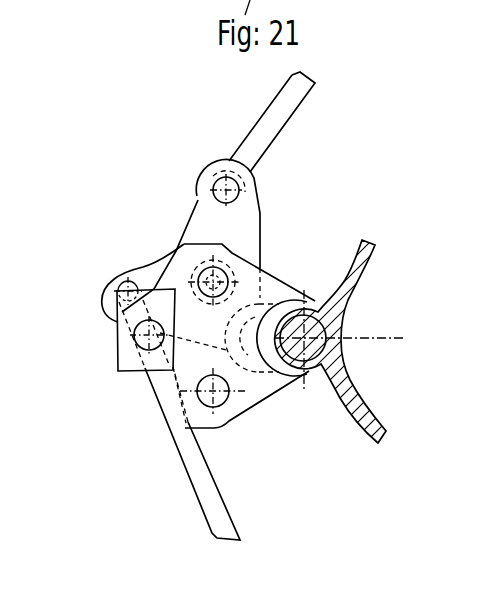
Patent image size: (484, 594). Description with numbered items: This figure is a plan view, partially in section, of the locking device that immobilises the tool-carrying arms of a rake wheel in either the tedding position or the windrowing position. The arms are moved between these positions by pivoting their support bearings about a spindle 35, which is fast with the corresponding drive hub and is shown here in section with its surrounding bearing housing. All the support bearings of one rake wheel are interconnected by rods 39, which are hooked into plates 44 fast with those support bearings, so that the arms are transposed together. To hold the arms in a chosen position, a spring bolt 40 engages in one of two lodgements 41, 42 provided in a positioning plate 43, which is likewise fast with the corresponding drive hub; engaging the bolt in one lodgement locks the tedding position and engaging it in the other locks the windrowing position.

The spindle 35 is at (312, 342).
The rod 39 is at (273, 128).
The spring bolt 40 is at (211, 279).
The lodgement 41 is at (211, 279).
The lodgement 42 is at (208, 398).
The positioning plate 43 is at (205, 358).
The plate 44 is at (145, 268).